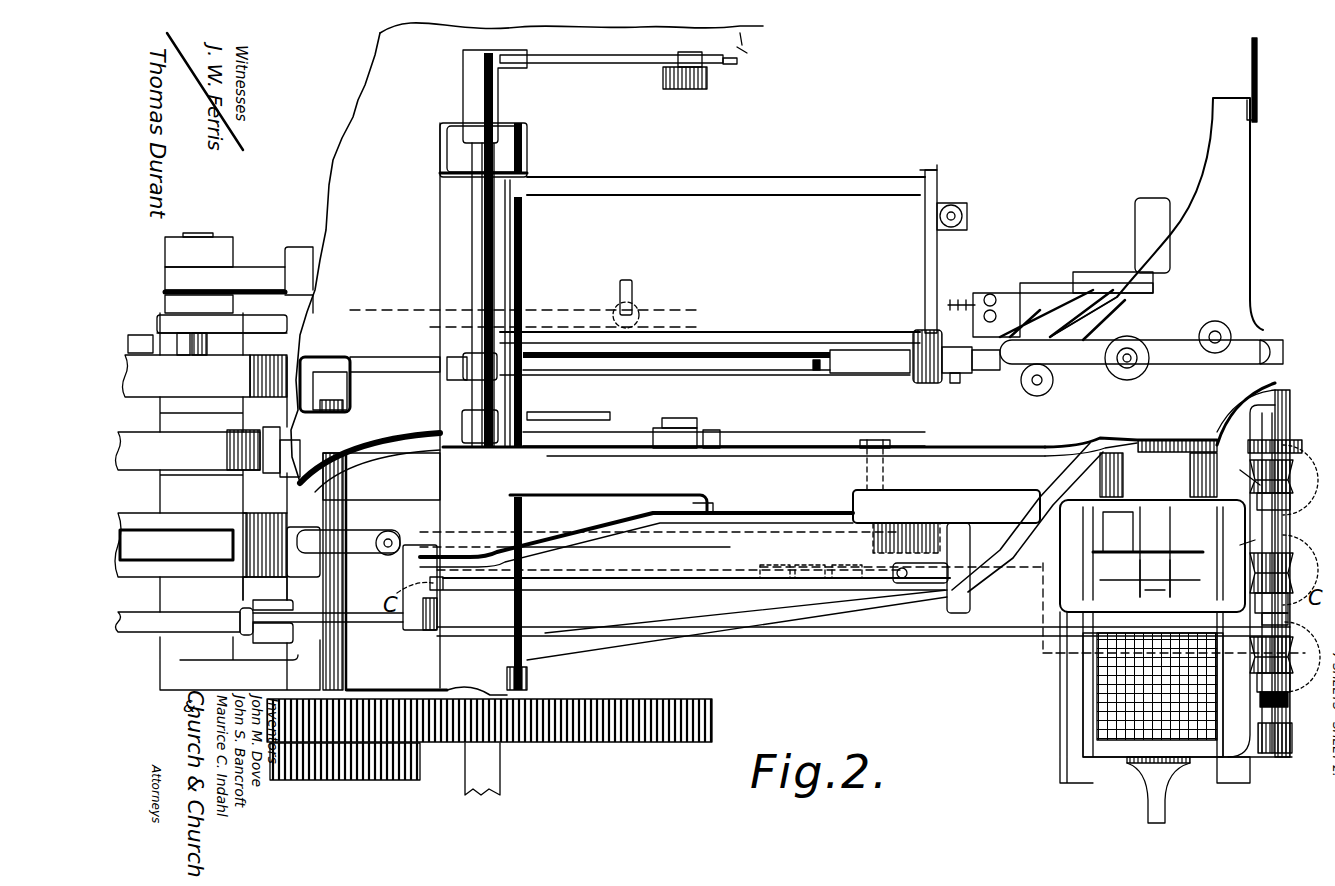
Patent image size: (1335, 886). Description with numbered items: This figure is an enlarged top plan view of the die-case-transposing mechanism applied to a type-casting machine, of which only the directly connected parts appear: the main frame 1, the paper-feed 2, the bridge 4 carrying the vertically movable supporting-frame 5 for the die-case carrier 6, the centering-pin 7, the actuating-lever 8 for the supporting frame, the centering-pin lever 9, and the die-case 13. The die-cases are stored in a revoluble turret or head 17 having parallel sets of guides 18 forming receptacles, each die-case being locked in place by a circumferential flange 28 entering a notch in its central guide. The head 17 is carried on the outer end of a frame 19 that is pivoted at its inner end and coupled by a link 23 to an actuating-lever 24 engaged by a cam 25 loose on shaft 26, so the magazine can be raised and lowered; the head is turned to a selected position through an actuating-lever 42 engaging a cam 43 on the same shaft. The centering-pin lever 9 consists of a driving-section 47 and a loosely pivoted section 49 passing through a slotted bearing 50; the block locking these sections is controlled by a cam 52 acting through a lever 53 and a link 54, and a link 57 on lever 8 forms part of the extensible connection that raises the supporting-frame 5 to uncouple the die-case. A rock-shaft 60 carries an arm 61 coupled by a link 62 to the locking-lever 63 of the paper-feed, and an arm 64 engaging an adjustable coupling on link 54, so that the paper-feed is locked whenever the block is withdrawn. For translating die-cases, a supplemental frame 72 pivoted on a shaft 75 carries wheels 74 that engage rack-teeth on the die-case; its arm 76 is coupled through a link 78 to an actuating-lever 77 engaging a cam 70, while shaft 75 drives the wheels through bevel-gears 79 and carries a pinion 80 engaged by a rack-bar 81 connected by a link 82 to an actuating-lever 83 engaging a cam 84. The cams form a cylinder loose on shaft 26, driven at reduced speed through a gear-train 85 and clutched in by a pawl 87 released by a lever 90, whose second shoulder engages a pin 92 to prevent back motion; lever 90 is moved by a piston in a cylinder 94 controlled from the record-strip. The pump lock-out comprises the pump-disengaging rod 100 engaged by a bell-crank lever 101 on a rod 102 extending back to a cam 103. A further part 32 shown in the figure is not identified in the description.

The main frame 1 is at (1156, 187).
The paper-feed 2 is at (737, 45).
The bridge 4 is at (1106, 360).
The supporting-frame 5 is at (1062, 293).
The die-case carrier 6 is at (1135, 262).
The centering-pin 7 is at (1125, 367).
The actuating-lever 8 is at (1190, 356).
The centering-pin lever 9 is at (1100, 345).
The die-case 13 is at (1100, 687).
The head 17 is at (1156, 697).
The guides 18 is at (1085, 778).
The frame 19 is at (1265, 642).
The link 23 is at (712, 445).
The actuating-lever 24 is at (295, 455).
The cam 25 is at (198, 450).
The shaft 26 is at (205, 238).
The flange 28 is at (1195, 575).
The cams 32 is at (790, 572).
The actuating-lever 42 is at (390, 495).
The cam 43 is at (240, 520).
The driving-section 47 is at (800, 340).
The loosely-pivoted section 49 is at (720, 370).
The slotted bearing 50 is at (918, 355).
The cam 52 is at (251, 376).
The lever 53 is at (348, 395).
The link 54 is at (405, 372).
The link 57 is at (958, 378).
The rock-shaft 60 is at (482, 233).
The arm 61 is at (525, 55).
The link 62 is at (578, 63).
The locking-lever 63 is at (688, 62).
The arm 64 is at (525, 385).
The cam 70 is at (205, 621).
The supplemental frame 72 is at (1272, 753).
The wheel 74 is at (1237, 506).
The shaft 75 is at (1262, 705).
The arm 76 is at (1260, 595).
The actuating-lever 77 is at (390, 620).
The link 78 is at (968, 632).
The bevel-gears 79 is at (1262, 645).
The pinion 80 is at (1292, 437).
The rack-bar 81 is at (1188, 450).
The link 82 is at (598, 522).
The actuating-lever 83 is at (400, 577).
The cam 84 is at (236, 590).
The gear-train 85 is at (489, 749).
The pawl 87 is at (140, 335).
The lever 90 is at (265, 287).
The pin 92 is at (187, 376).
The cylinder 94 is at (645, 315).
The pump-disengaging rod 100 is at (970, 598).
The bell-crank lever 101 is at (930, 590).
The rod 102 is at (622, 547).
The cam 103 is at (181, 545).